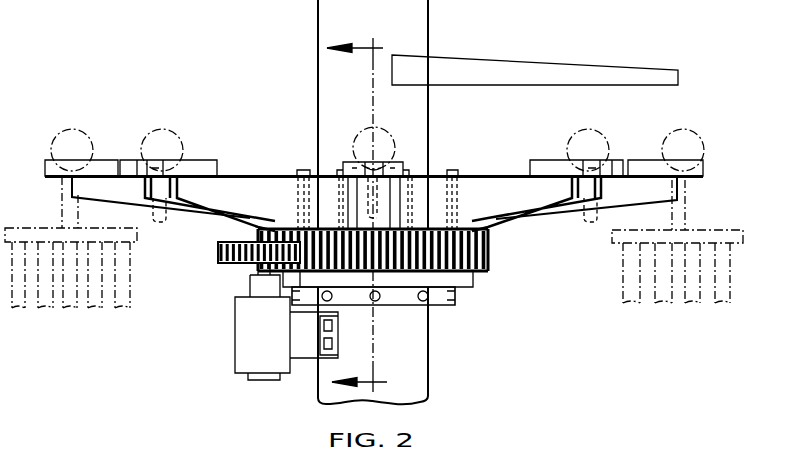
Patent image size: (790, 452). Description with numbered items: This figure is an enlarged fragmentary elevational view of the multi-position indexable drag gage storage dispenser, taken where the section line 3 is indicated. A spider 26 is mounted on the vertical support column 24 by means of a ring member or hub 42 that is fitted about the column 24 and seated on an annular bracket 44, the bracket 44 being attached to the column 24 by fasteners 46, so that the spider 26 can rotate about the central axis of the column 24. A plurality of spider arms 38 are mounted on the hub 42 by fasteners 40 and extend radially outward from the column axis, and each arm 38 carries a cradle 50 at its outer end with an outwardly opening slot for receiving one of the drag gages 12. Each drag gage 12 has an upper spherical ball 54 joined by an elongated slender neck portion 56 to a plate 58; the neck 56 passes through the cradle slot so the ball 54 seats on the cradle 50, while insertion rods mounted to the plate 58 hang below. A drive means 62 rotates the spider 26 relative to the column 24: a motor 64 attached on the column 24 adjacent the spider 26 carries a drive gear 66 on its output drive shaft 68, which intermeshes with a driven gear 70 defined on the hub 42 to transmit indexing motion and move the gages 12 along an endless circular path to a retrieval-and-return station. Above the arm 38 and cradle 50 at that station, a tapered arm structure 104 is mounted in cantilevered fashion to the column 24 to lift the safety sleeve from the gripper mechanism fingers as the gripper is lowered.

The section line 3- 3 is at (364, 216).
The drag gage 12 is at (132, 287).
The support column 24 is at (432, 368).
The spider 26 is at (243, 175).
The spider arm 38 is at (190, 218).
The fastener 40 is at (296, 171).
The ring member or hub 42 is at (332, 226).
The annular bracket 44 is at (396, 305).
The fastener 46 is at (338, 302).
The cradle 50 is at (45, 168).
The spherical ball 54 is at (140, 143).
The neck portion 56 is at (58, 207).
The plate 58 is at (42, 228).
The drive means 62 is at (255, 321).
The motor 64 is at (236, 350).
The drive gear 66 is at (103, 311).
The output drive shaft 68 is at (255, 263).
The driven gear 70 is at (490, 253).
The tapered arm structure 104 is at (539, 68).